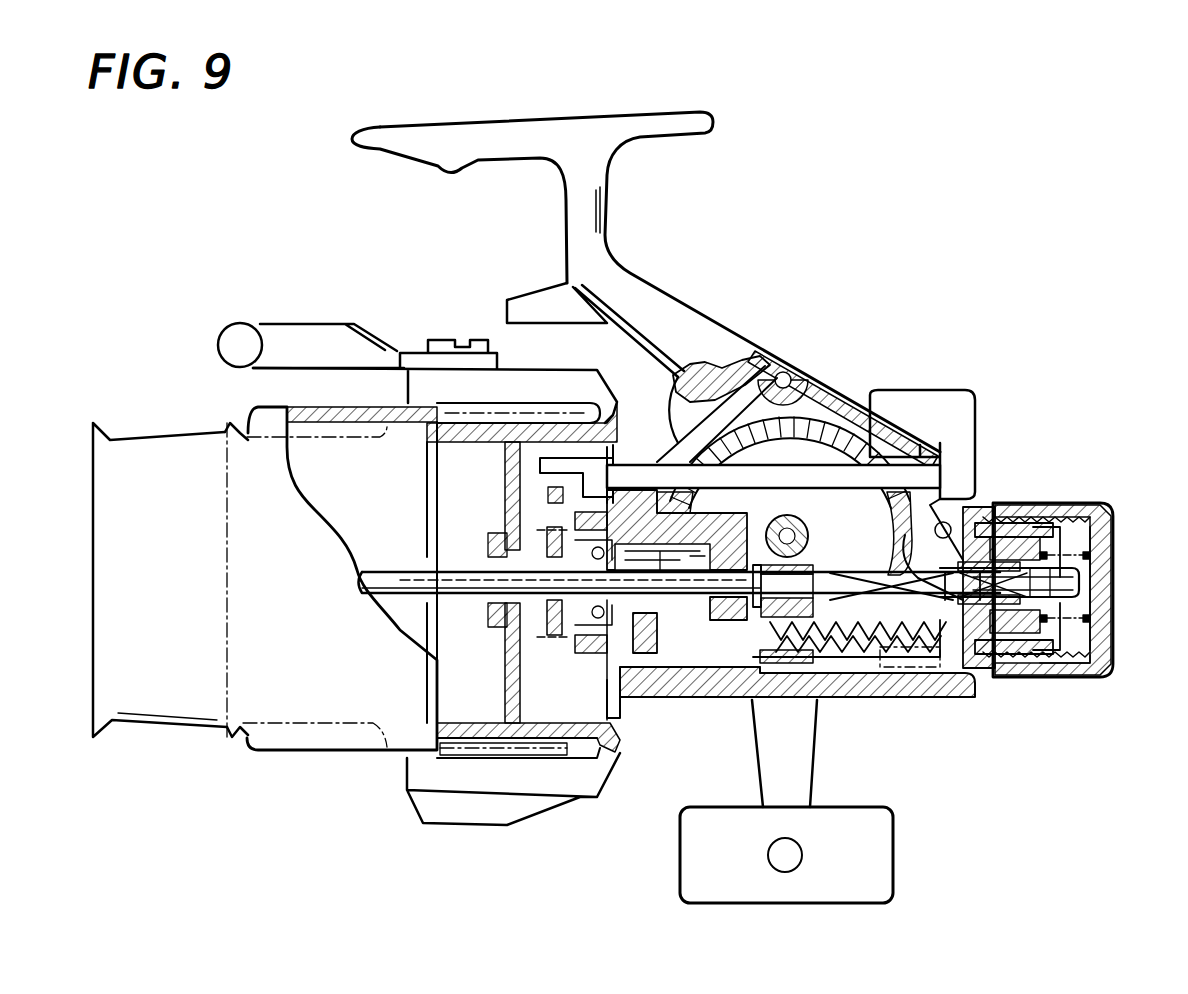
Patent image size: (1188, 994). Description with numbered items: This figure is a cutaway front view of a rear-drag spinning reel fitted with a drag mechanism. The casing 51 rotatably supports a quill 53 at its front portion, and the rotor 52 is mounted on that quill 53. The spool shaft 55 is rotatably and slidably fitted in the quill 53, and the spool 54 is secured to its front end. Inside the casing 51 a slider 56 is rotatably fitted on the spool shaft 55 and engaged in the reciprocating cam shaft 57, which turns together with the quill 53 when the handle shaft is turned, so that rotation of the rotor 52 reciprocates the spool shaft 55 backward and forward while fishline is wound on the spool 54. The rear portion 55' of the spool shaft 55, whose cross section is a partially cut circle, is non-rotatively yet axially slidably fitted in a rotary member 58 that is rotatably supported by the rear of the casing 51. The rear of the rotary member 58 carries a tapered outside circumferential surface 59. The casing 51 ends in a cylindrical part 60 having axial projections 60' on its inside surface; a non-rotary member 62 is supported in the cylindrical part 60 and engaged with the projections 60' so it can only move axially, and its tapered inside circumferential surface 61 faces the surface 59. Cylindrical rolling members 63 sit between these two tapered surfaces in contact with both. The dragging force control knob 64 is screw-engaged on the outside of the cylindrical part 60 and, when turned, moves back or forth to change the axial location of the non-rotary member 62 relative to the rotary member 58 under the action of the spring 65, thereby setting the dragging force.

The casing 51 is at (830, 405).
The rotor 52 is at (458, 380).
The quill 53 is at (608, 557).
The spool 54 is at (330, 415).
The spool shaft 55 is at (680, 445).
The rear portion of the spool shaft 55' is at (905, 658).
The slider 56 is at (753, 623).
The reciprocating cam shaft 57 is at (875, 645).
The rotary member 58 is at (970, 558).
The tapered outside circumferential surface 59 is at (1007, 645).
The cylindrical part 60 is at (1053, 557).
The projections 60' is at (1107, 572).
The tapered inside circumferential surface 61 is at (1022, 630).
The non-rotary member 62 is at (1055, 677).
The cylindrical rolling members 63 is at (1022, 537).
The dragging force control knob 64 is at (1107, 620).
The spring 65 is at (1087, 548).